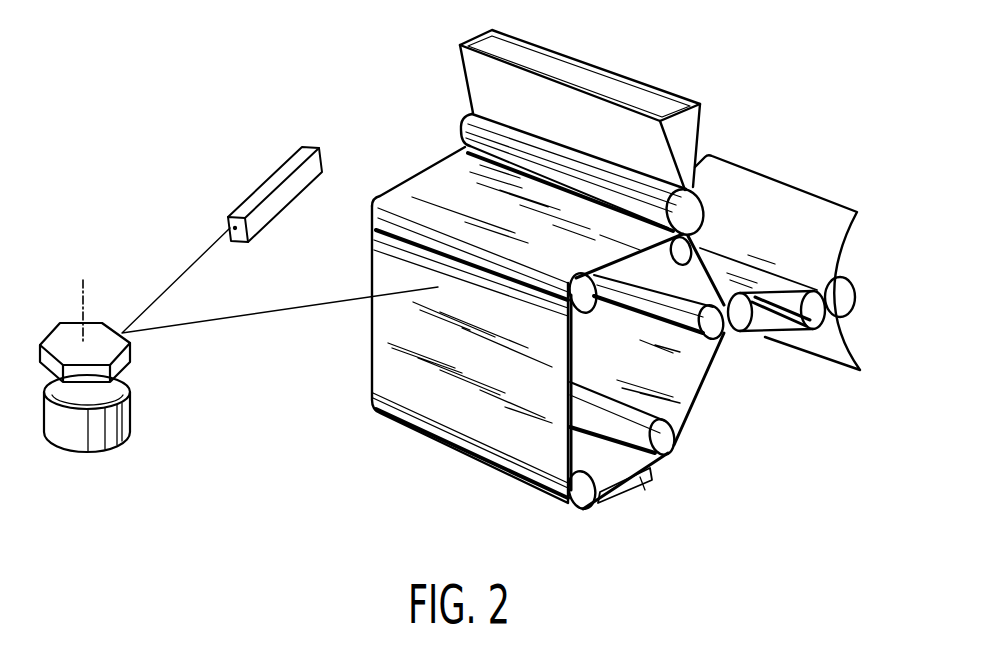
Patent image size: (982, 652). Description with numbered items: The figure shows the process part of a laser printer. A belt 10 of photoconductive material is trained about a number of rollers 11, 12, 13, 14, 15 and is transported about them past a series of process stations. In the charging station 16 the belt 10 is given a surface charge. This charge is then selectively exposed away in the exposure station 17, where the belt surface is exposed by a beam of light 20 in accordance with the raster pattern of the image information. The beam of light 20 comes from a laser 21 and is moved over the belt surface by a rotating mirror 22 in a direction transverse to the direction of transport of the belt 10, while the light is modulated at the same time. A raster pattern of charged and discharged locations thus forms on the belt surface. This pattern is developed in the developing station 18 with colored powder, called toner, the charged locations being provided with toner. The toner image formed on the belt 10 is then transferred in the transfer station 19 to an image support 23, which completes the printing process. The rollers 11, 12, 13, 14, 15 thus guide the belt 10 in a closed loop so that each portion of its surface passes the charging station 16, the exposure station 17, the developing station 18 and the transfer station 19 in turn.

The belt 10 is at (706, 394).
The roller 11 is at (667, 447).
The roller 12 is at (590, 510).
The roller 13 is at (592, 306).
The roller 14 is at (688, 247).
The roller 15 is at (713, 330).
The charging station 16 is at (632, 487).
The exposure station 17 is at (358, 336).
The developing station 18 is at (630, 92).
The transfer station 19 is at (787, 293).
The beam of light 20 is at (212, 323).
The laser 21 is at (265, 178).
The rotating mirror 22 is at (116, 328).
The image support 23 is at (847, 243).